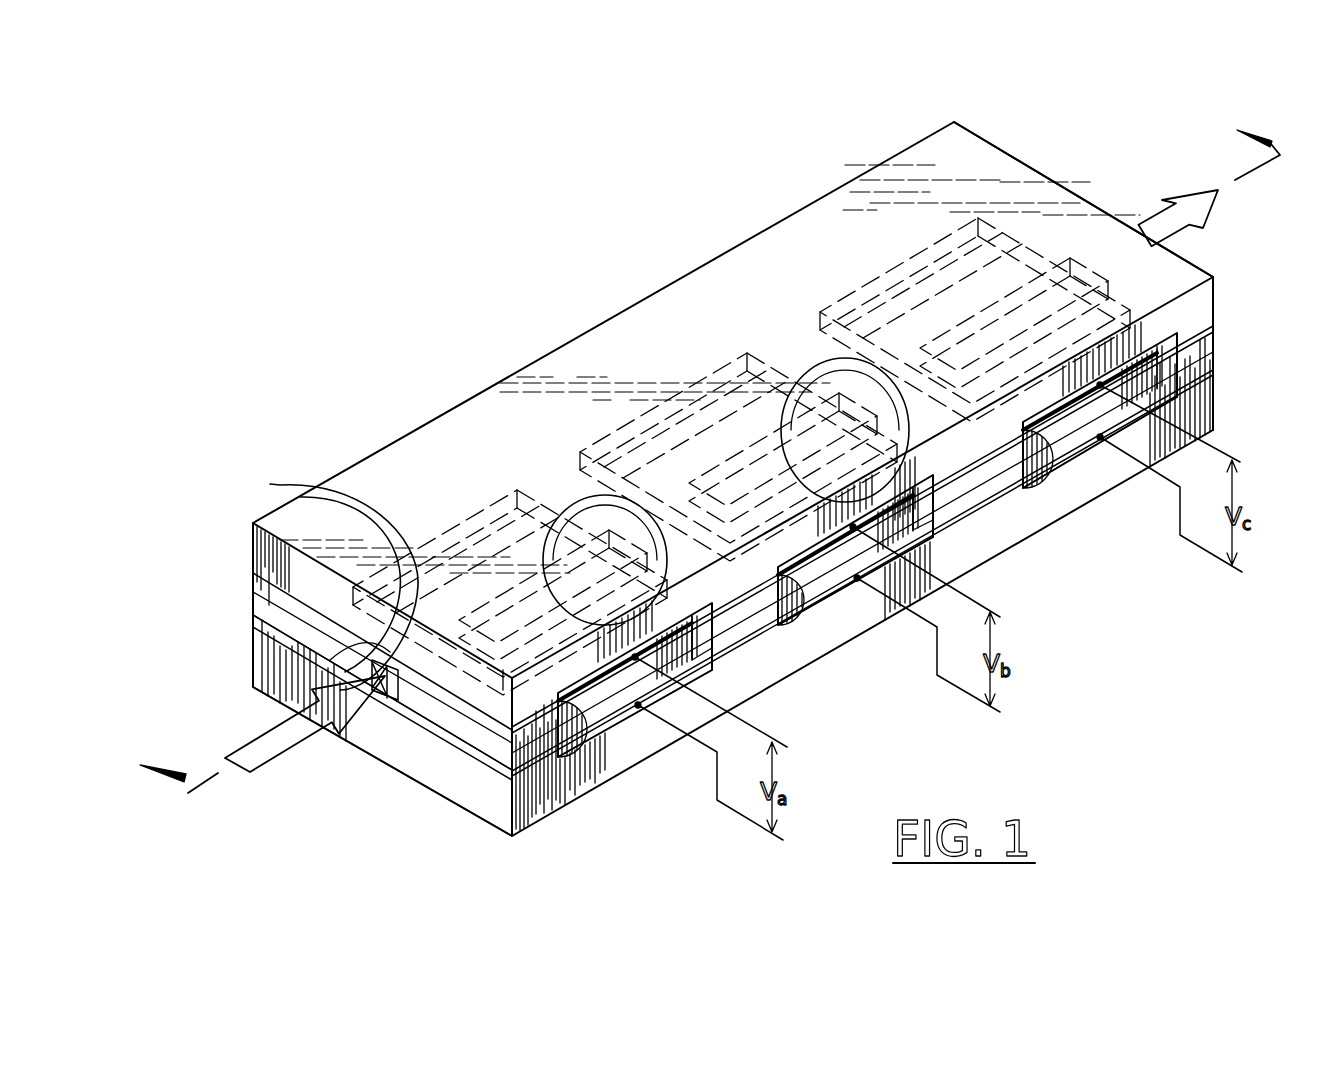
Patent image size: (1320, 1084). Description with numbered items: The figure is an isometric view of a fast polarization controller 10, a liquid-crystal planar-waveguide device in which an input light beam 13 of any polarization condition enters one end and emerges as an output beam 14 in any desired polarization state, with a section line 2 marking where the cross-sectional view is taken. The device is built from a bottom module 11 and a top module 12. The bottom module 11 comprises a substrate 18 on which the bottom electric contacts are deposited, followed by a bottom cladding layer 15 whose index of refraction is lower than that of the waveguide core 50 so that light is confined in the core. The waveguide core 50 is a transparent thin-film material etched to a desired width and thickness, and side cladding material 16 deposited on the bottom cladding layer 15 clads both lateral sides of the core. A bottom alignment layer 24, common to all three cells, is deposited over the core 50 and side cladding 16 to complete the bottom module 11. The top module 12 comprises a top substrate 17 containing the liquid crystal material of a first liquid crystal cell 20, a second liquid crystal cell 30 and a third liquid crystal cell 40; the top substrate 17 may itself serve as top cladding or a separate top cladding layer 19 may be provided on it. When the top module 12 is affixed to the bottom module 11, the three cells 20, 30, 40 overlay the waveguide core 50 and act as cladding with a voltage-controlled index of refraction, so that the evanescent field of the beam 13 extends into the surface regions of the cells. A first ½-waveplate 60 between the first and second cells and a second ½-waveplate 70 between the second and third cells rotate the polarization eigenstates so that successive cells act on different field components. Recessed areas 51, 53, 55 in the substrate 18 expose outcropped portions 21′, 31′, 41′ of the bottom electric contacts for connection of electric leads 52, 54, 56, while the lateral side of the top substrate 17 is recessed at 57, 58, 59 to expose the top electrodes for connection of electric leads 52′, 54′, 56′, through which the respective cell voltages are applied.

The section line 2- 2 is at (696, 446).
The fast polarization controller 10 is at (606, 289).
The bottom module 11 is at (247, 680).
The top module 12 is at (245, 580).
The input light beam 13 is at (262, 735).
The output beam 14 is at (1158, 214).
The bottom cladding layer 15 is at (388, 706).
The side cladding material 16 is at (460, 745).
The top substrate 17 is at (1002, 148).
The substrate 18 is at (1215, 395).
The top cladding layer 19 is at (383, 601).
The first liquid crystal cell 20 is at (280, 485).
The outcropped portion of first bottom electric contact 21′ is at (612, 717).
The bottom alignment layer 24 is at (367, 645).
The second liquid crystal cell 30 is at (585, 455).
The outcropped portion of second bottom electric contact 31′ is at (807, 575).
The third liquid crystal cell 40 is at (835, 252).
The outcropped portion of third bottom electric contact 41′ is at (1058, 445).
The waveguide core 50 is at (388, 712).
The recessed area 51 is at (590, 722).
The electric lead 52 is at (737, 812).
The electric lead 52′ is at (738, 710).
The recessed area 53 is at (797, 767).
The electric lead 54 is at (950, 683).
The electric lead 54′ is at (963, 593).
The recessed area 55 is at (1021, 634).
The electric lead 56 is at (1083, 447).
The electric lead 56′ is at (1213, 453).
The recess in top substrate 57 is at (640, 712).
The recess in top substrate 58 is at (857, 585).
The recess in top substrate 59 is at (1180, 540).
The first ½-waveplate 60 is at (545, 505).
The second ½-waveplate 70 is at (797, 367).